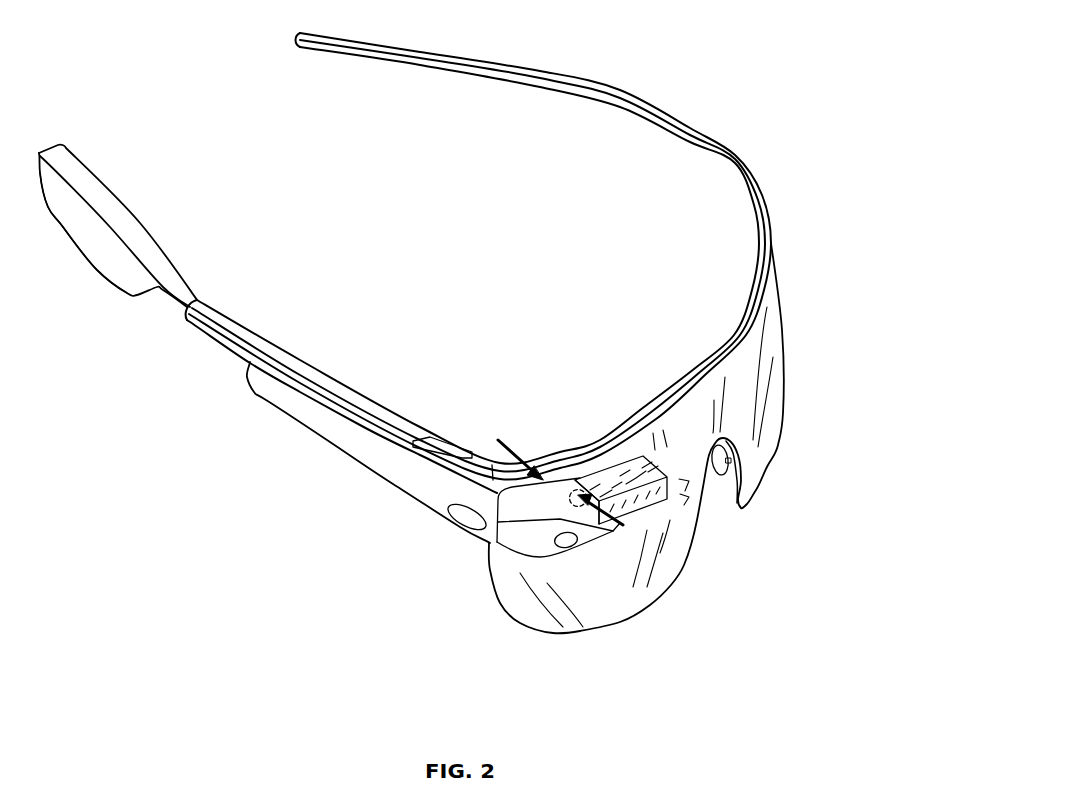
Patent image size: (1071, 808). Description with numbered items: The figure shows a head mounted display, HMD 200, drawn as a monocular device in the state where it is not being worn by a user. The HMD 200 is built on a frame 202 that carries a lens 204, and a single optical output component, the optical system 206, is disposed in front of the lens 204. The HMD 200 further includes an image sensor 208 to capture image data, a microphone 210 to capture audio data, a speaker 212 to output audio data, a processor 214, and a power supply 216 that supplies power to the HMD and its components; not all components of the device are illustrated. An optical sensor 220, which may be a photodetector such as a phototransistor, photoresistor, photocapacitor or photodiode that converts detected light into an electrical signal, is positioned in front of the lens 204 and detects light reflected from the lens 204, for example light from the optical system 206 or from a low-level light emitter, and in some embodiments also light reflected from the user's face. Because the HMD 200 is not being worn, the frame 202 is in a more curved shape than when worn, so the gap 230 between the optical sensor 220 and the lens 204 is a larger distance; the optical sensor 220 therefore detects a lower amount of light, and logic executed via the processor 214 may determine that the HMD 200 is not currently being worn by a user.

The HMD 200 is at (575, 162).
The frame 202 is at (735, 157).
The lens 204 is at (622, 597).
The optical system 206 is at (644, 457).
The image sensor 208 is at (562, 547).
The microphone 210 is at (463, 519).
The speaker 212 is at (287, 400).
The processor 214 is at (88, 240).
The power supply 216 is at (83, 233).
The optical sensor 220 is at (578, 488).
The gap 230 is at (500, 440).